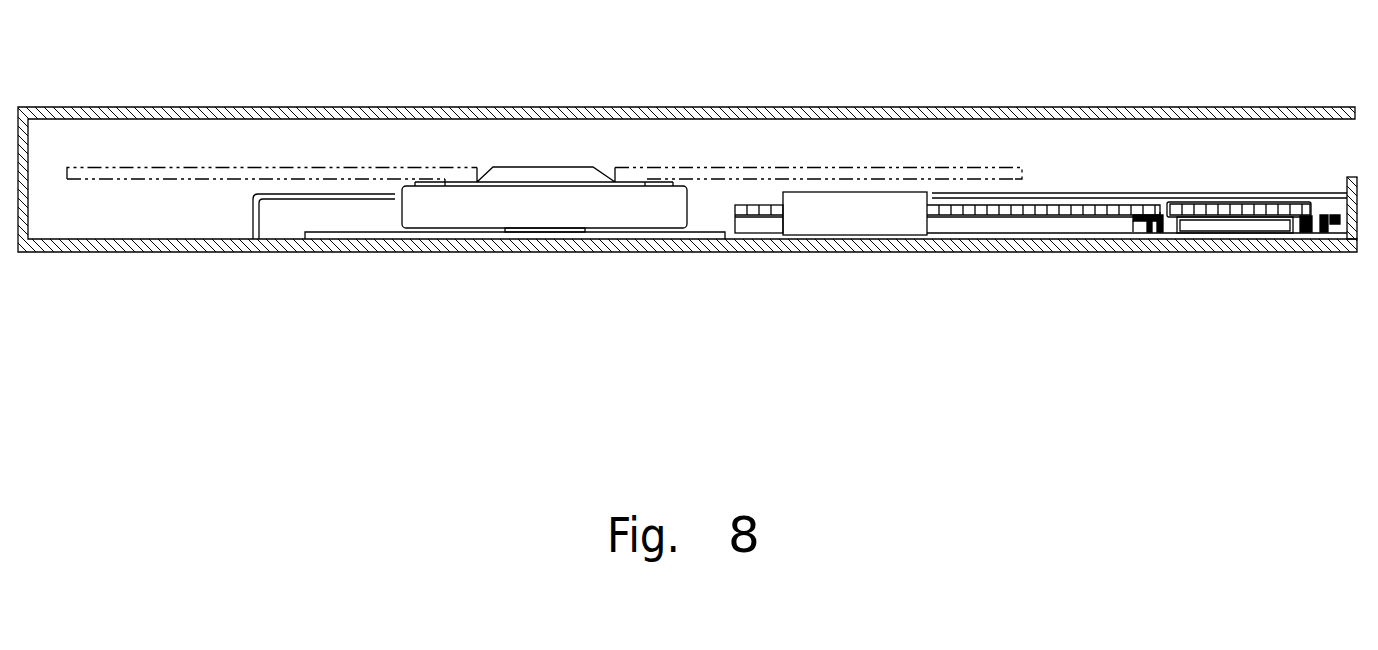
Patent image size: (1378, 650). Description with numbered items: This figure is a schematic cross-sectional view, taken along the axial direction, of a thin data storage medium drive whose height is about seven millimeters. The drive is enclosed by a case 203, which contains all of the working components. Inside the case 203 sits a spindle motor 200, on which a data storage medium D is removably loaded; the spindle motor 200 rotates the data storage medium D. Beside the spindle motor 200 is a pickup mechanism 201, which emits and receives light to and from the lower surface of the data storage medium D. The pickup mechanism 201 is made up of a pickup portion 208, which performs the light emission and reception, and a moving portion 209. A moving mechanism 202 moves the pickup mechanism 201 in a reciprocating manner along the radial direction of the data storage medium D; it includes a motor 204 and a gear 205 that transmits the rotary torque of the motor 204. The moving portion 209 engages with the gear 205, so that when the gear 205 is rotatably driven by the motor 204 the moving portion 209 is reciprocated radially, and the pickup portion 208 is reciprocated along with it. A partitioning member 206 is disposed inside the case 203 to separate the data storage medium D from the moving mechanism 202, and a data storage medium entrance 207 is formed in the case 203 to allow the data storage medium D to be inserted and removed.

The data storage medium D is at (190, 168).
The spindle motor 200 is at (613, 215).
The pickup mechanism 201 is at (885, 216).
The moving mechanism 202 is at (1243, 192).
The case 203 is at (802, 108).
The motor 204 is at (1213, 223).
The gear 205 is at (1120, 212).
The partitioning member 206 is at (1045, 198).
The data storage medium entrance 207 is at (1357, 177).
The pickup portion 208 is at (806, 215).
The moving portion 209 is at (1003, 223).